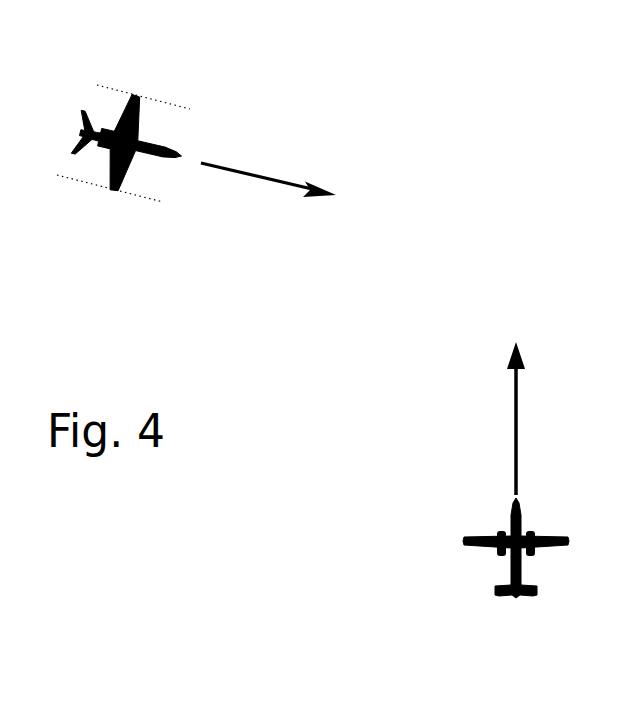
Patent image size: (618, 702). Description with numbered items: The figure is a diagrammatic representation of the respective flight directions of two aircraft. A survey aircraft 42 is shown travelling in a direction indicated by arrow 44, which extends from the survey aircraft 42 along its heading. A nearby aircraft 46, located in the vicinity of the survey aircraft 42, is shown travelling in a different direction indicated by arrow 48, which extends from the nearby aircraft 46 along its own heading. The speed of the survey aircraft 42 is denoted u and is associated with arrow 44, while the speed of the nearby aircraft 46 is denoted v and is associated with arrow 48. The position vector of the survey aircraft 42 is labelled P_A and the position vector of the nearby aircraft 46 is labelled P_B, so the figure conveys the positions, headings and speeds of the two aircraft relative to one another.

The survey aircraft 42 is at (465, 540).
The arrow 44 is at (514, 388).
The nearby aircraft 46 is at (112, 163).
The arrow 48 is at (295, 183).